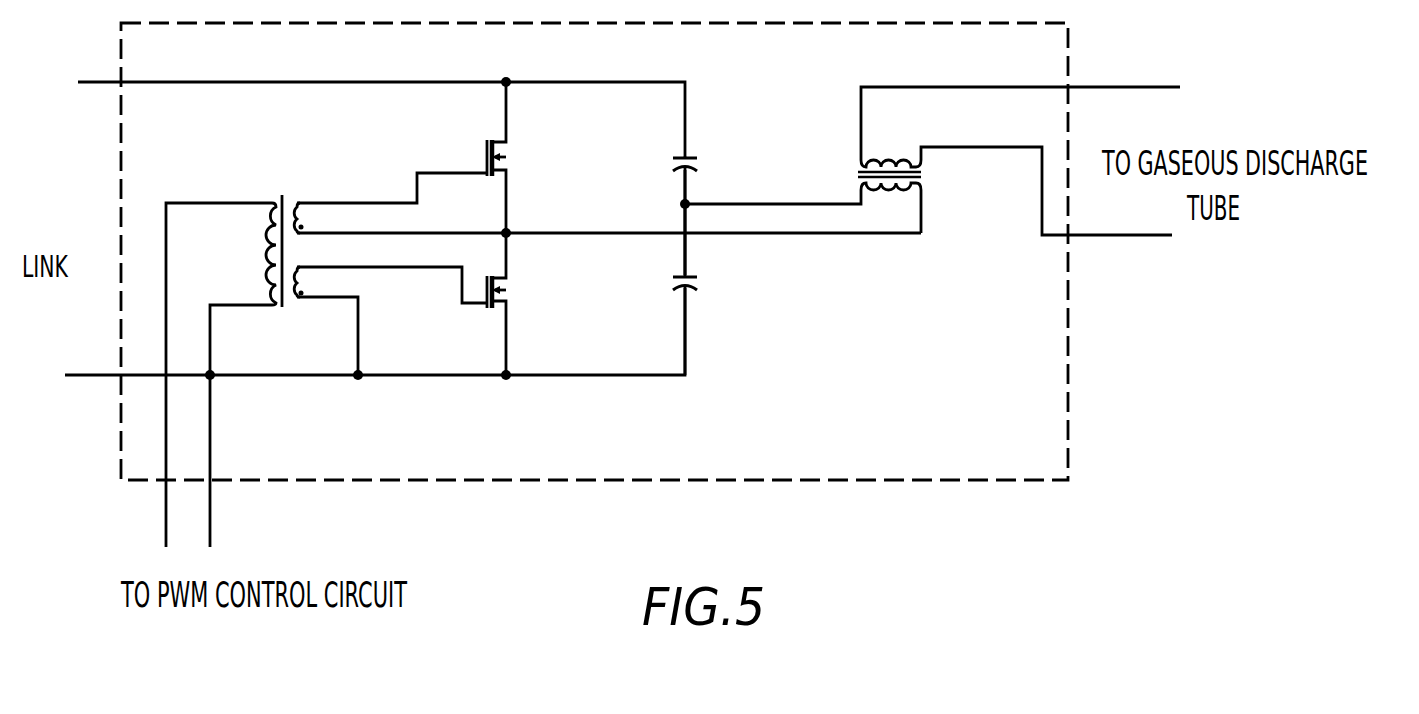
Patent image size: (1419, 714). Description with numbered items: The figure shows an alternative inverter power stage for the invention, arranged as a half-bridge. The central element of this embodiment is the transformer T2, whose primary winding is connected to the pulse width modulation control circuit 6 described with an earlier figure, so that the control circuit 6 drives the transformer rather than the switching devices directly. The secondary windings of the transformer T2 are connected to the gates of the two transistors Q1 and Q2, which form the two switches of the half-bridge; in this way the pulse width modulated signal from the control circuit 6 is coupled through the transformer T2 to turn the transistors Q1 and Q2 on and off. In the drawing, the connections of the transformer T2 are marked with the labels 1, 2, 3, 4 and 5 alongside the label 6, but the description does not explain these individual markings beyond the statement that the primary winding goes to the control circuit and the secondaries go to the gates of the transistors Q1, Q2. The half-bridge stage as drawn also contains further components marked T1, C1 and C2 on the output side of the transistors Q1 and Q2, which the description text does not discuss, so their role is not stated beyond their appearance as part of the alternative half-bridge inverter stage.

The transformer T2 secondary pin 1 is at (327, 321).
The transformer T2 secondary pin 2 is at (609, 220).
The transformer T2 secondary pin 3 is at (392, 269).
The transformer T2 secondary pin 4 is at (392, 184).
The transformer T2 primary pin 5 is at (219, 356).
The pulse width modulation control circuit 6 is at (241, 409).
The output transformer T1 is at (921, 177).
The transformer T2 is at (282, 195).
The transistor Q1 is at (508, 150).
The transistor Q2 is at (508, 288).
The upper capacitor C1 is at (699, 159).
The lower capacitor C2 is at (699, 283).